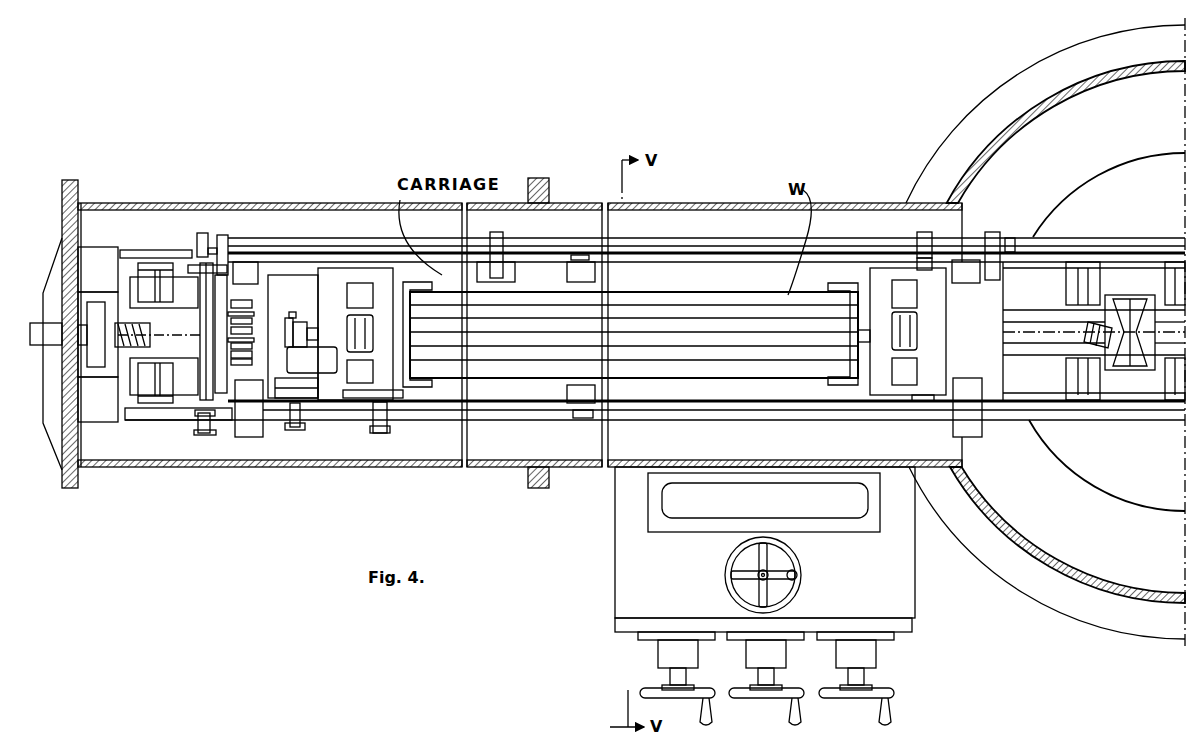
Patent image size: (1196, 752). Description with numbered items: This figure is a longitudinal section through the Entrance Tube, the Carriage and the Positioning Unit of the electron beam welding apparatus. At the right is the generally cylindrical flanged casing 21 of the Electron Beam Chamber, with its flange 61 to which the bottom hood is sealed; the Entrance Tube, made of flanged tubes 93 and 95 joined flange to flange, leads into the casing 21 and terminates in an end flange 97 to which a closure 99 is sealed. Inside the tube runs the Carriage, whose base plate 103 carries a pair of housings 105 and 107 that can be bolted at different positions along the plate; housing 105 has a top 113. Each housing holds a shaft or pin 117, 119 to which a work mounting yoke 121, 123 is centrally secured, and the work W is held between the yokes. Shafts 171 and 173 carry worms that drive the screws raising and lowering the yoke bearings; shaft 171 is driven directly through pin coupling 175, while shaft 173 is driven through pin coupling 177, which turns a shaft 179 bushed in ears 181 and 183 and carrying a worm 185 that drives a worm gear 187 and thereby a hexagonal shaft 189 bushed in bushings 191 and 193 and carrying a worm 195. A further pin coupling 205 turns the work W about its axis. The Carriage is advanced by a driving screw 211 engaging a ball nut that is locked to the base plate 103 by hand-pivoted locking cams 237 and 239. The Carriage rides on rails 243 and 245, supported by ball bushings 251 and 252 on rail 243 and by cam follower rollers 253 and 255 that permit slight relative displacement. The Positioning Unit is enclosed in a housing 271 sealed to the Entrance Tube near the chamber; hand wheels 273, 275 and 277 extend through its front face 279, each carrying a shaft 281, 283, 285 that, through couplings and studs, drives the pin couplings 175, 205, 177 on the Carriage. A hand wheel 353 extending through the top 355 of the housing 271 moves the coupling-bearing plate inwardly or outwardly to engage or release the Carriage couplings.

The flanged casing 21 is at (1113, 592).
The flange 61 is at (1064, 606).
The flanged tube 93 is at (726, 204).
The flanged tube 95 is at (310, 205).
The end flange 97 is at (80, 184).
The closure 99 is at (58, 243).
The base plate 103 is at (714, 398).
The housing 105 is at (344, 290).
The housing 107 is at (908, 334).
The top 113 is at (385, 284).
The shaft or pin 117 is at (392, 330).
The shaft or pin 119 is at (864, 343).
The work mounting yoke 121 is at (422, 385).
The work mounting yoke 123 is at (836, 382).
The shaft 171 is at (373, 405).
The shaft 173 is at (915, 260).
The pin coupling 175 is at (388, 433).
The pin coupling 177 is at (196, 434).
The shaft 179 is at (193, 423).
The ear 181 is at (188, 400).
The ear 183 is at (190, 268).
The worm 185 is at (193, 240).
The worm gear 187 is at (201, 240).
The shaft 189 is at (677, 245).
The bushing 191 is at (223, 238).
The bushing 193 is at (998, 232).
The worm 195 is at (923, 232).
The pin coupling 205 is at (302, 431).
The driving screw 211 is at (150, 335).
The locking cam 237 is at (298, 318).
The locking cam 239 is at (312, 360).
The rail 243 is at (528, 413).
The rail 245 is at (650, 255).
The ball bushing 251 is at (247, 434).
The ball bushing 252 is at (975, 428).
The cam follower roller 253 is at (580, 417).
The cam follower roller 255 is at (582, 254).
The housing 271 is at (951, 580).
The hand wheel 273 is at (716, 697).
The hand wheel 275 is at (805, 697).
The hand wheel 277 is at (893, 695).
The front face 279 is at (912, 631).
The shaft or pin 281 is at (680, 678).
The shaft or pin 283 is at (768, 678).
The shaft or pin 285 is at (858, 678).
The hand wheel 353 is at (797, 573).
The top 355 is at (912, 598).